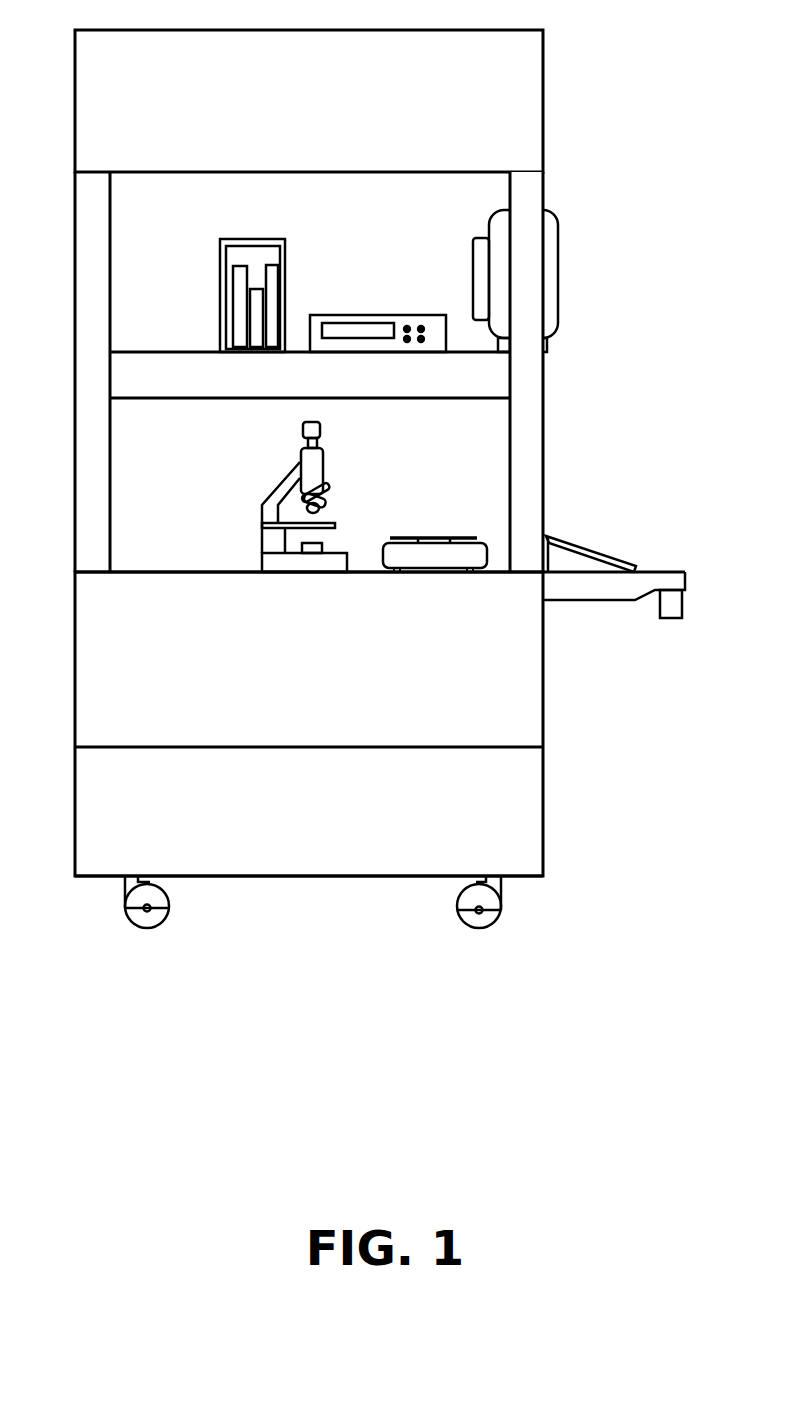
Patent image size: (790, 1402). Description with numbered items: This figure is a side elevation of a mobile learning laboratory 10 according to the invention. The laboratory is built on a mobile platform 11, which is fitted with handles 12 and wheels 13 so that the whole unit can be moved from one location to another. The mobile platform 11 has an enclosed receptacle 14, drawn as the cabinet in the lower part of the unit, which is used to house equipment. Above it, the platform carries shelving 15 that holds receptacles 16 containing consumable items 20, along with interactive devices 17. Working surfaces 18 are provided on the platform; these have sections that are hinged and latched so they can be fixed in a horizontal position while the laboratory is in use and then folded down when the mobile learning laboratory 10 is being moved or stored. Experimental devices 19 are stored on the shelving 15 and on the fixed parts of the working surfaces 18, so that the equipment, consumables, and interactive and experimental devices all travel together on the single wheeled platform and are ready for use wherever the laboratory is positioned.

The mobile learning laboratory 10 is at (309, 286).
The mobile platform 11 is at (309, 894).
The handles 12 is at (692, 611).
The wheels 13 is at (327, 912).
The enclosed receptacle 14 is at (290, 724).
The shelving 15 is at (310, 361).
The receptacles 16 is at (252, 280).
The interactive devices 17 is at (383, 315).
The working surfaces 18 is at (380, 567).
The experimental devices 19 is at (420, 535).
The consumable items 20 is at (260, 299).